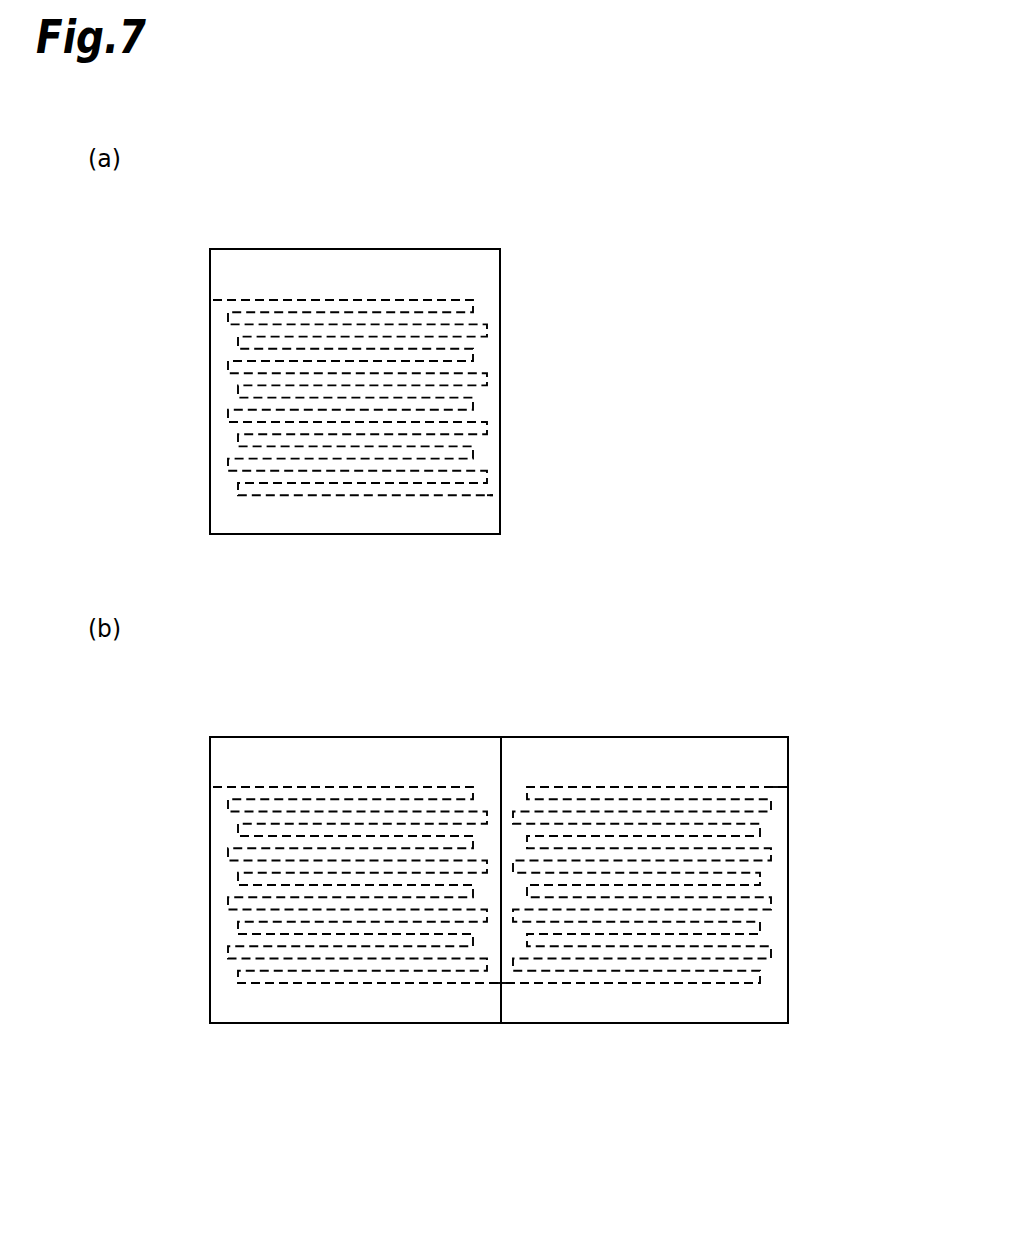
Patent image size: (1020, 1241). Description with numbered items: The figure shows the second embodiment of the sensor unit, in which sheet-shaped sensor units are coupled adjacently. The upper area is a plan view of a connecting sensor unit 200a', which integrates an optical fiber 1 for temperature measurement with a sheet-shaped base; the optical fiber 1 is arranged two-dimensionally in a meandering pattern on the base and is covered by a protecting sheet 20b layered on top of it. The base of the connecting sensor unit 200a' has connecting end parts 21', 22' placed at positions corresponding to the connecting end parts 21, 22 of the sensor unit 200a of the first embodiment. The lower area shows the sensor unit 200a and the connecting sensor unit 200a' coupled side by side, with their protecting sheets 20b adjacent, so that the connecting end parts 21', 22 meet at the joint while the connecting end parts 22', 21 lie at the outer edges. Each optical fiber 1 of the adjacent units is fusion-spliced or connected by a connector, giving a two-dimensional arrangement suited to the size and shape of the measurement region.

The optical fiber 1 is at (417, 298).
The connecting sensor unit 200a' is at (351, 593).
The sensor unit 200a is at (644, 836).
The protecting sheet 20b is at (362, 518).
The connecting end part 21' is at (501, 732).
The connecting end part 22' is at (180, 568).
The connecting end part 21 is at (811, 810).
The connecting end part 22 is at (540, 1002).